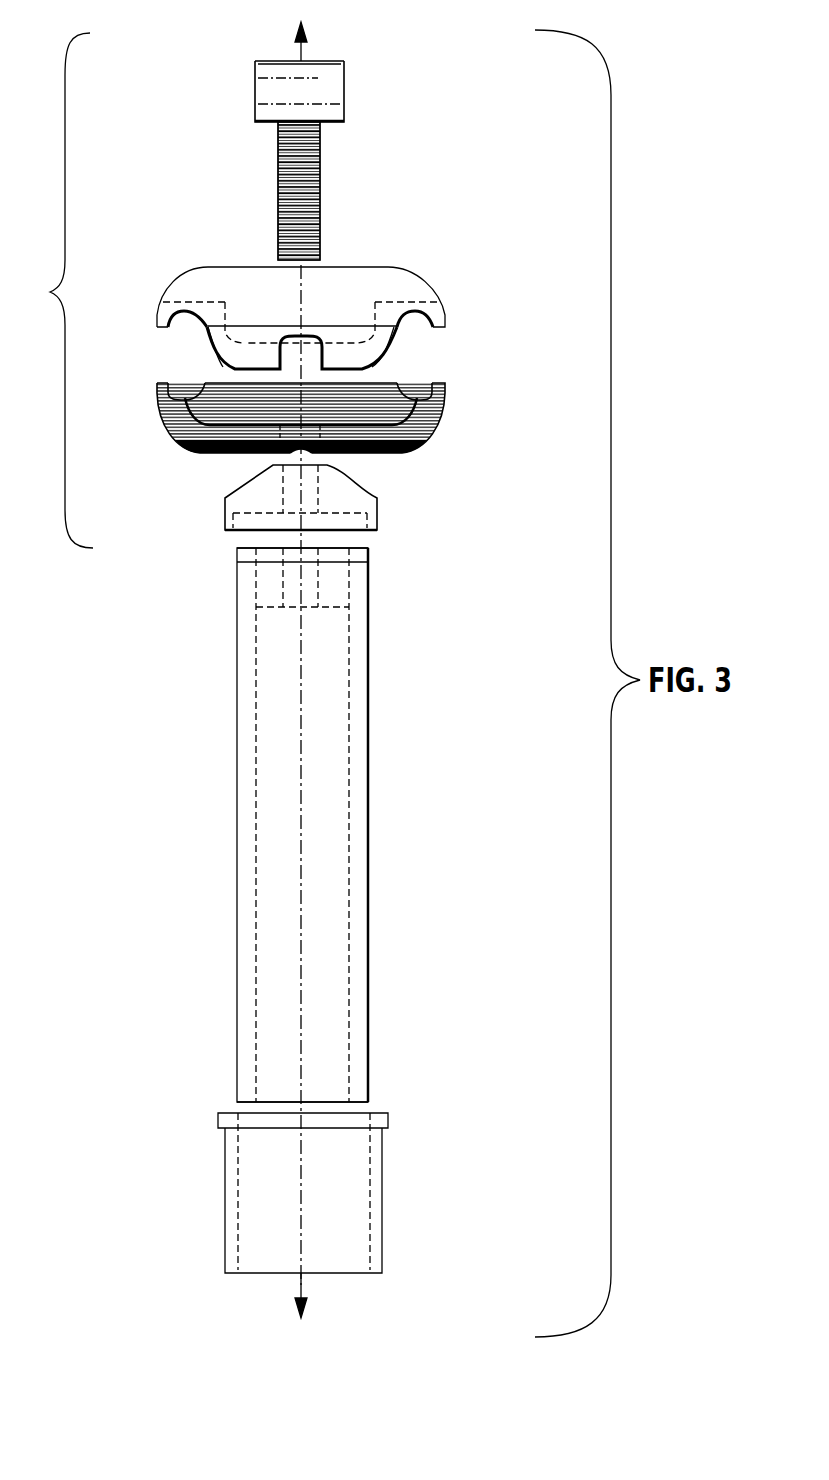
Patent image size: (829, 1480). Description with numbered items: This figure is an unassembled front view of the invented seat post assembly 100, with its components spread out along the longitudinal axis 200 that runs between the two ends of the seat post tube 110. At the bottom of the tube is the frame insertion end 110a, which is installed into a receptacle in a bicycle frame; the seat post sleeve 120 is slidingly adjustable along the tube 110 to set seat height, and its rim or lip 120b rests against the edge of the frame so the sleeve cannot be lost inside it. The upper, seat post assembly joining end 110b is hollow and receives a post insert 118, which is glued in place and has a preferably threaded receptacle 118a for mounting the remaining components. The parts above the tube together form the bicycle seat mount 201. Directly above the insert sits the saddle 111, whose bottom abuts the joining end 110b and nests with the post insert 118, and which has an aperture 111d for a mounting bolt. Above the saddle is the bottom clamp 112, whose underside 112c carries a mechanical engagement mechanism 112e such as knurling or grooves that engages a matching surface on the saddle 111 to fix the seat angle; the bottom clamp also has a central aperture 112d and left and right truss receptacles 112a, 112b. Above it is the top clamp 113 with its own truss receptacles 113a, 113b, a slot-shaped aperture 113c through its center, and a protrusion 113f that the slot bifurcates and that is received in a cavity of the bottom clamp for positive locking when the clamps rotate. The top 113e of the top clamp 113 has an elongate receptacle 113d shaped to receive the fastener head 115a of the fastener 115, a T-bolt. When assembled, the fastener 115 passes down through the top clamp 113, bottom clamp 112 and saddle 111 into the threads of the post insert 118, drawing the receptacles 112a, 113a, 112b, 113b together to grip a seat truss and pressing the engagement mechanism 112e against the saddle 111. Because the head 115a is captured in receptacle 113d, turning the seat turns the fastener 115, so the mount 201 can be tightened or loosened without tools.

The seat post clamp assembly 100 is at (207, 691).
The seat post tube 110 is at (368, 716).
The frame insertion end 110a is at (345, 1103).
The seat post assembly joining end 110b is at (338, 567).
The saddle 111 is at (335, 468).
The aperture 111d is at (312, 523).
The bottom clamp 112 is at (442, 416).
The left truss receptacle of bottom clamp 112a is at (183, 395).
The right truss receptacle of bottom clamp 112b is at (408, 388).
The underside of bottom clamp 112c is at (375, 451).
The aperture of bottom clamp 112d is at (298, 451).
The mechanical engagement mechanism 112e is at (180, 443).
The top clamp 113 is at (425, 278).
The left truss receptacle of top clamp 113a is at (180, 318).
The right truss receptacle of top clamp 113b is at (400, 318).
The slot-shaped aperture 113c is at (325, 351).
The elongate receptacle 113d is at (303, 318).
The top of top clamp 113e is at (207, 268).
The protrusion 113f is at (360, 370).
The fastener 115 is at (344, 86).
The fastener head 115a is at (313, 72).
The post insert 118 is at (340, 556).
The receptacle 118a is at (317, 545).
The seat post sleeve 120 is at (383, 1187).
The rim or lip 120b is at (218, 1120).
The longitudinal axis 200 is at (301, 674).
The bicycle seat mount 201 is at (56, 290).